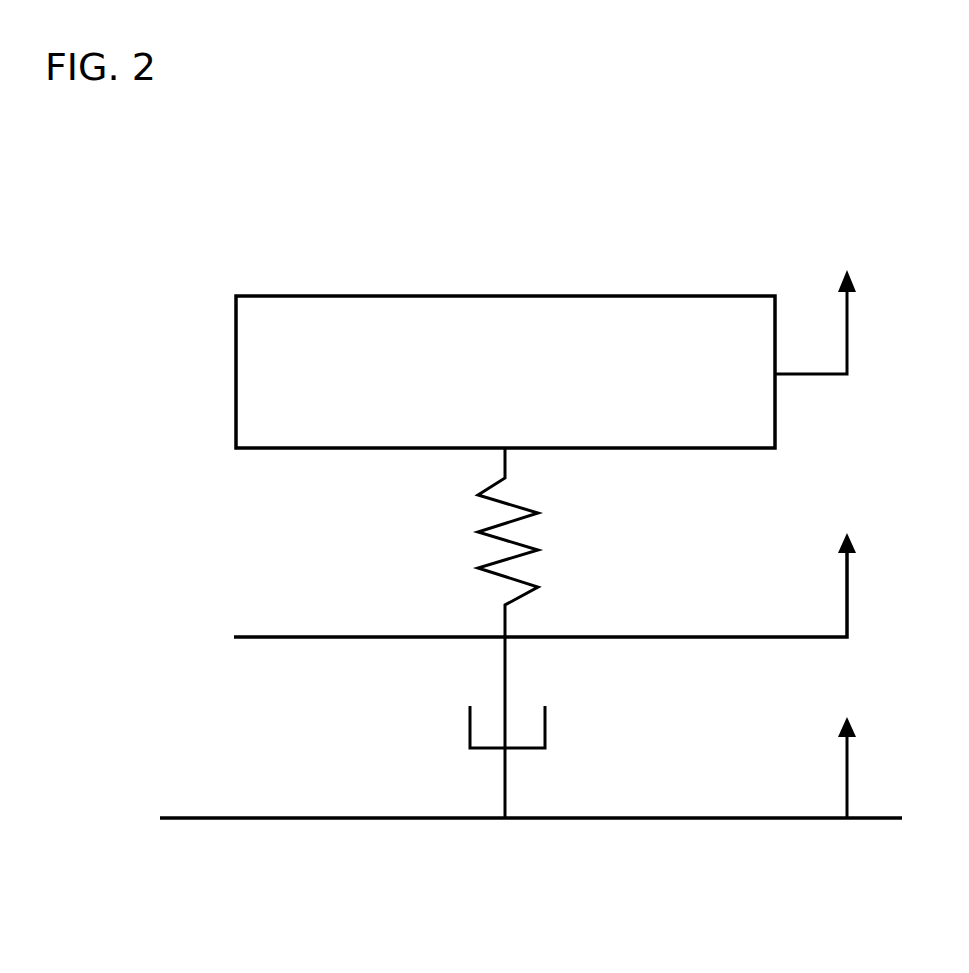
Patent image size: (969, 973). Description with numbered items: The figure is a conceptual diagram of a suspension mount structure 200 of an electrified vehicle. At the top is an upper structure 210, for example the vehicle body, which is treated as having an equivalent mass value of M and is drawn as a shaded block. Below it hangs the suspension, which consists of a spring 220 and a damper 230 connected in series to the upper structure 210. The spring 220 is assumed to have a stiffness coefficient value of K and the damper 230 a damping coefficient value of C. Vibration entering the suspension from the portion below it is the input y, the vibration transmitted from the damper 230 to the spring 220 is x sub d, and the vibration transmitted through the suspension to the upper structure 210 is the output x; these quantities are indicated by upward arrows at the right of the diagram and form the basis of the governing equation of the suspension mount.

The suspension mount structure 200 is at (546, 199).
The upper structure 210 is at (618, 290).
The spring 220 is at (545, 512).
The damper 230 is at (553, 722).